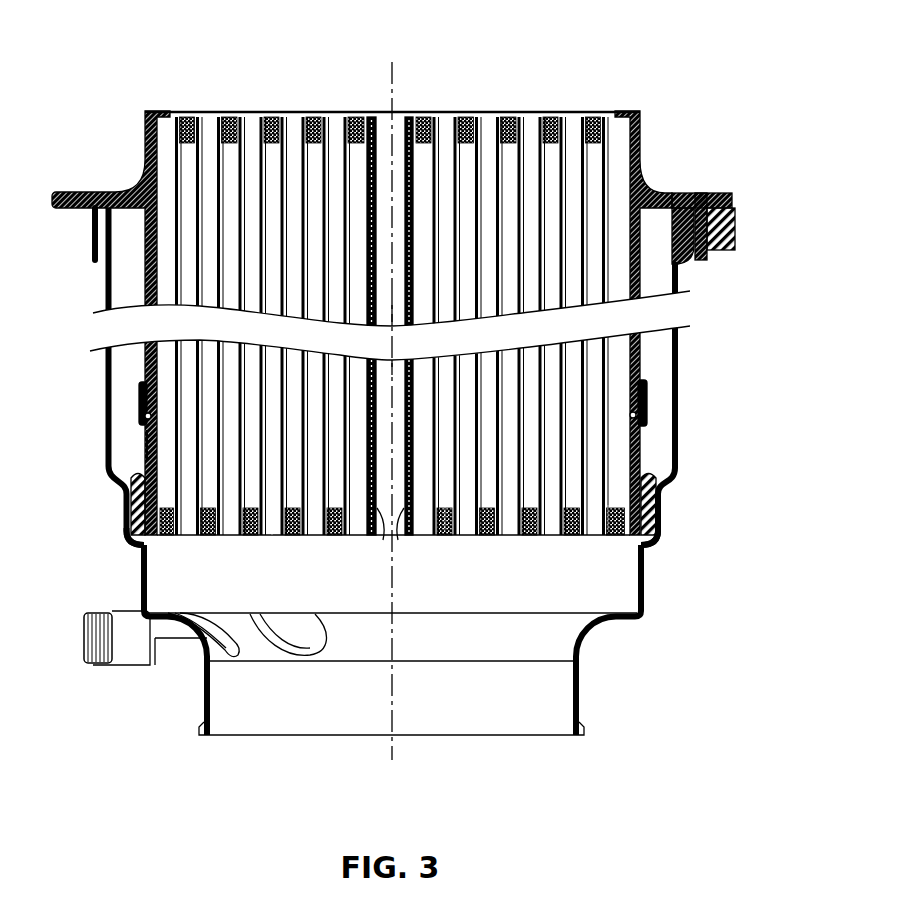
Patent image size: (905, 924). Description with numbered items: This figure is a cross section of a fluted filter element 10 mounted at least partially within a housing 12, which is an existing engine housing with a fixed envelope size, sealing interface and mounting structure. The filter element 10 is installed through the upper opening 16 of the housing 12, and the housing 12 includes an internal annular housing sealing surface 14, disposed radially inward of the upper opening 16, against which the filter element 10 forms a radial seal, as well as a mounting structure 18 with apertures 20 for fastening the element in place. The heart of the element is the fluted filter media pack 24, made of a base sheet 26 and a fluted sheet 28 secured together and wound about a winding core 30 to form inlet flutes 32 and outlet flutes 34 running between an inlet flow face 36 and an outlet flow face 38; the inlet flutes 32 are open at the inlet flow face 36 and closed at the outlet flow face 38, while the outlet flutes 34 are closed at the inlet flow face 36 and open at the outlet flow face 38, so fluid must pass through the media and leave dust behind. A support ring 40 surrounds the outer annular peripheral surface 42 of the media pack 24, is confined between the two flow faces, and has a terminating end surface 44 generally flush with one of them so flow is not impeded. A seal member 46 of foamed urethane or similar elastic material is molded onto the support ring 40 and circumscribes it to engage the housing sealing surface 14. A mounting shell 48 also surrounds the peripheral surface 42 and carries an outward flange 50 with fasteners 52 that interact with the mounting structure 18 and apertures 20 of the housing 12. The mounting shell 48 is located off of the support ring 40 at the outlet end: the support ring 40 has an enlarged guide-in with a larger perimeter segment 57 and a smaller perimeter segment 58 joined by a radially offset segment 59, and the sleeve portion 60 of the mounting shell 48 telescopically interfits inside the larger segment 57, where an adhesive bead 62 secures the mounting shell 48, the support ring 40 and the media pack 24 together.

The fluted filter element 10 is at (585, 100).
The housing 12 is at (660, 613).
The housing sealing surface 14 is at (651, 544).
The upper opening 16 is at (656, 192).
The mounting structure 18 is at (718, 236).
The apertures 20 is at (706, 255).
The fluted filter media pack 24 is at (446, 123).
The base sheet 26 is at (322, 128).
The fluted sheet 28 is at (306, 128).
The winding core 30 is at (377, 508).
The inlet flutes 32 is at (207, 150).
The outlet flutes 34 is at (190, 508).
The inlet flow face 36 is at (492, 113).
The outlet flow face 38 is at (272, 537).
The support ring 40 is at (608, 503).
The outer annular peripheral surface 42 is at (156, 342).
The terminating end surface 44 is at (141, 554).
The seal member 46 is at (645, 498).
The mounting shell 48 is at (641, 283).
The outward flange 50 is at (672, 228).
The fasteners 52 is at (700, 196).
The larger perimeter segment 57 is at (143, 393).
The smaller perimeter segment 58 is at (147, 446).
The radially offset segment 59 is at (120, 413).
The sleeve portion 60 is at (641, 357).
The adhesive bead 62 is at (640, 413).